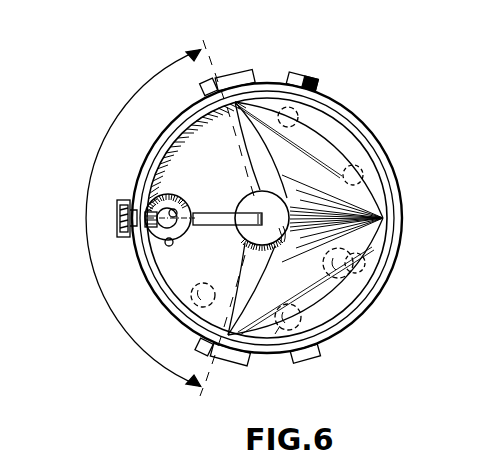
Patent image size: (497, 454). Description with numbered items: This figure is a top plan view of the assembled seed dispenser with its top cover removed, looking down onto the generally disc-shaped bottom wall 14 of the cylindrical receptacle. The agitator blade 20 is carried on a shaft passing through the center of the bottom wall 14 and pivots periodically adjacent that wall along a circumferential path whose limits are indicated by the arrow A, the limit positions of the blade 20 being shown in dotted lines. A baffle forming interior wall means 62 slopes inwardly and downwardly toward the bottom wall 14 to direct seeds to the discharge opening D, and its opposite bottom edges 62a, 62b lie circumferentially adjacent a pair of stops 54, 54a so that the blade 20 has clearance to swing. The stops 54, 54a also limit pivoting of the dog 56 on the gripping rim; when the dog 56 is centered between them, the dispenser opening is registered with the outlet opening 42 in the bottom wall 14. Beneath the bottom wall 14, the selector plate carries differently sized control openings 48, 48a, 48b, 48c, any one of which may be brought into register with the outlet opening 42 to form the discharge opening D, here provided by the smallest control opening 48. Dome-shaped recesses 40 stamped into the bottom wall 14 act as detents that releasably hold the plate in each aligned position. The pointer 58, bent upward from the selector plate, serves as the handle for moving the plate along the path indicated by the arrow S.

The bottom wall 14 is at (165, 172).
The agitator blade 20 is at (213, 212).
The recesses 40 is at (363, 175).
The outlet opening 42 is at (170, 246).
The control opening 48 is at (174, 211).
The control opening 48a is at (195, 308).
The control opening 48b is at (277, 332).
The control opening 48c is at (350, 276).
The stop 54 is at (246, 70).
The stop 54a is at (233, 362).
The dog 56 is at (117, 218).
The pointer 58 is at (305, 76).
The interior wall means 62 is at (342, 158).
The bottom edge 62a is at (232, 290).
The bottom edge 62b is at (232, 105).
The arrow A is at (106, 302).
The discharge opening D is at (161, 234).
The arrow S is at (405, 216).